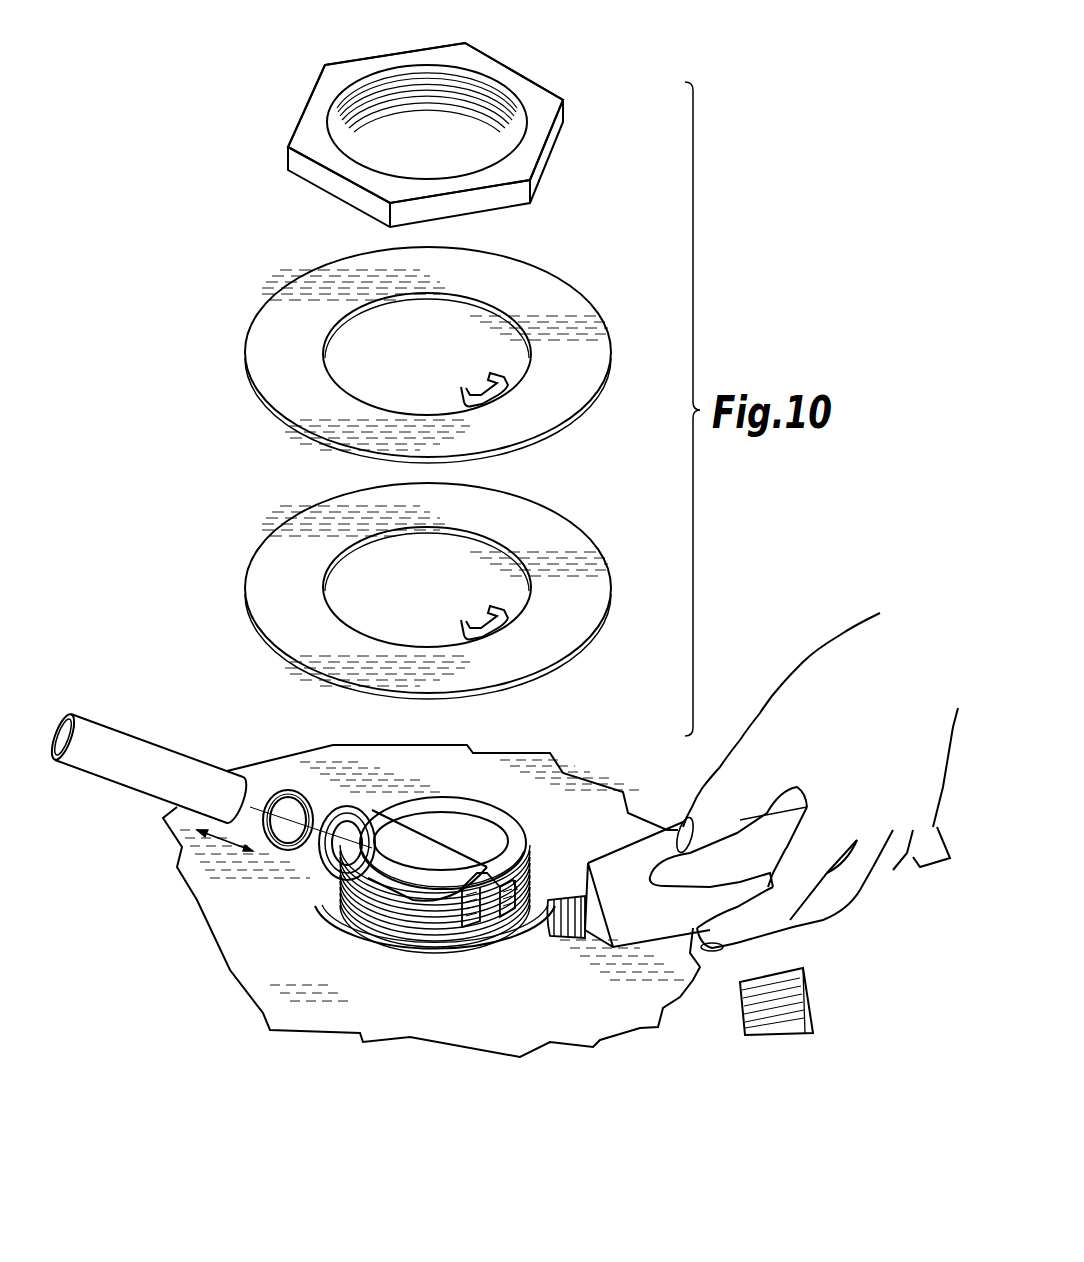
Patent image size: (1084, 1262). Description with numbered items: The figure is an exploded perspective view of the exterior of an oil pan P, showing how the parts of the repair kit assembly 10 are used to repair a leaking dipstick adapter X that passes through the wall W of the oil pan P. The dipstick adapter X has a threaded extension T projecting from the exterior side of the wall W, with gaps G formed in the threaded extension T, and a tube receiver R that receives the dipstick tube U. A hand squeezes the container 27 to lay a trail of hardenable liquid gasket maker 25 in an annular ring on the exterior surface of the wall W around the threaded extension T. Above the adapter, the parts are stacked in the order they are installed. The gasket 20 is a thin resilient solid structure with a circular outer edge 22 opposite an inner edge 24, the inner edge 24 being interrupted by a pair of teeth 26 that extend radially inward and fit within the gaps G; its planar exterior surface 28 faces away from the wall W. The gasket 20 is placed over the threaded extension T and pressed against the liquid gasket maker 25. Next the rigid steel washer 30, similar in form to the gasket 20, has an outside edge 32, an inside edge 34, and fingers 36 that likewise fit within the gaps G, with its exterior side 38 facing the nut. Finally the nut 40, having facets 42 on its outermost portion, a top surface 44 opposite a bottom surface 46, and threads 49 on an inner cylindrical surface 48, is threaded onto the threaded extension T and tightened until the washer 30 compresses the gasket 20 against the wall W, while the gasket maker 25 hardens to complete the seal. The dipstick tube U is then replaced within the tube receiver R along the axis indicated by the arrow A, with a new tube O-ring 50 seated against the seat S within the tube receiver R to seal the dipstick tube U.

The repair kit assembly 10 is at (193, 222).
The gasket 20 is at (590, 524).
The outer edge 22 is at (273, 532).
The inner edge 24 is at (365, 547).
The hardenable liquid gasket maker 25 is at (412, 975).
The teeth 26 is at (492, 610).
The container 27 is at (677, 877).
The exterior surface 28 is at (435, 591).
The washer 30 is at (586, 431).
The outside edge 32 is at (278, 293).
The inside edge 34 is at (365, 312).
The fingers 36 is at (492, 377).
The exterior side 38 is at (435, 355).
The nut 40 is at (582, 91).
The facets 42 is at (398, 52).
The top surface 44 is at (425, 123).
The bottom surface 46 is at (542, 175).
The cylindrical surface 48 is at (353, 160).
The threads 49 is at (437, 87).
The tube O-ring 50 is at (278, 793).
The dipstick tube U is at (145, 750).
The seat S is at (357, 820).
The tube receiver R is at (415, 833).
The dipstick adapter X is at (507, 806).
The threaded extension T is at (510, 830).
The axial direction A is at (217, 840).
The gaps G is at (483, 917).
The oil pan P is at (333, 1034).
The wall W is at (535, 957).